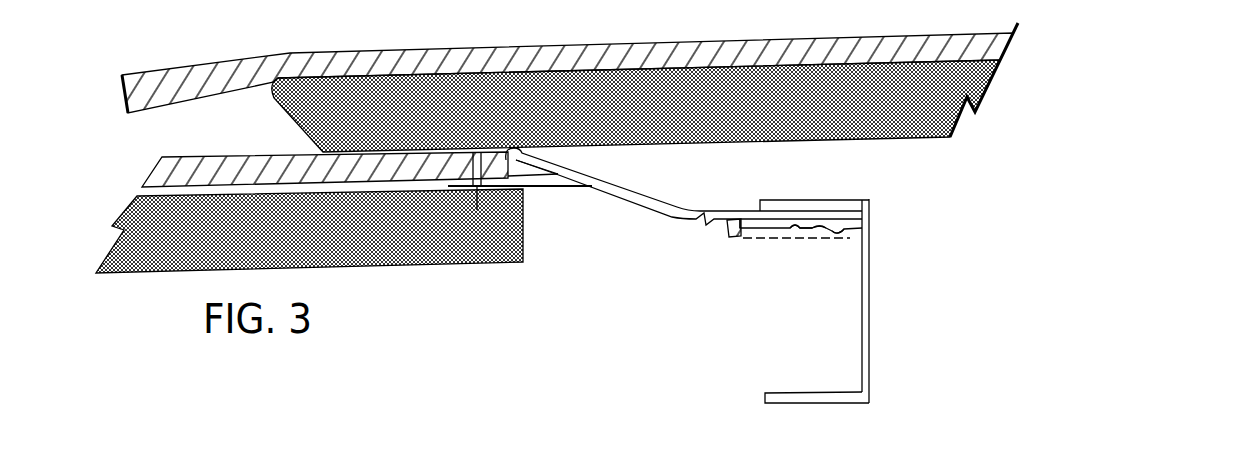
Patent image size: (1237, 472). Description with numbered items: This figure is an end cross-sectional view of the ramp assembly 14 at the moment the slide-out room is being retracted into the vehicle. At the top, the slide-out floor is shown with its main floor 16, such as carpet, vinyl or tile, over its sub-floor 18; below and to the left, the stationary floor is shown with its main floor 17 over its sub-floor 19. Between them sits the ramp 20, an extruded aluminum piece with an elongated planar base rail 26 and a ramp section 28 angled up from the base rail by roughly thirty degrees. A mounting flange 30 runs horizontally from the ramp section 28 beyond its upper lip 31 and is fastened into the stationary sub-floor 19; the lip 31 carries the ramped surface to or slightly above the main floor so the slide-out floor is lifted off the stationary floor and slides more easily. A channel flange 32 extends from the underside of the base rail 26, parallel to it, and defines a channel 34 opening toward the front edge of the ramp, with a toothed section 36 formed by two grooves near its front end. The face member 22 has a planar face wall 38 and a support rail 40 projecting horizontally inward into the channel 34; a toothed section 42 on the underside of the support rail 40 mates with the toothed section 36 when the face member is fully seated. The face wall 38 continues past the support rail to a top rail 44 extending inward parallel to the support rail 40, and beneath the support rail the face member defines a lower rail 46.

The ramp assembly 14 is at (776, 183).
The main floor 16 is at (502, 49).
The main floor 17 is at (180, 168).
The sub-floor 18 is at (921, 127).
The sub-floor 19 is at (438, 262).
The ramp 20 is at (684, 193).
The face member 22 is at (851, 308).
The base rail 26 is at (749, 214).
The ramp section 28 is at (612, 184).
The mounting flange 30 is at (530, 186).
The lip 31 is at (538, 155).
The channel flange 32 is at (770, 238).
The channel 34 is at (735, 226).
The toothed section 36 is at (834, 235).
The face wall 38 is at (872, 373).
The support rail 40 is at (856, 223).
The toothed section 42 is at (855, 230).
The top rail 44 is at (828, 199).
The lower rail 46 is at (808, 405).